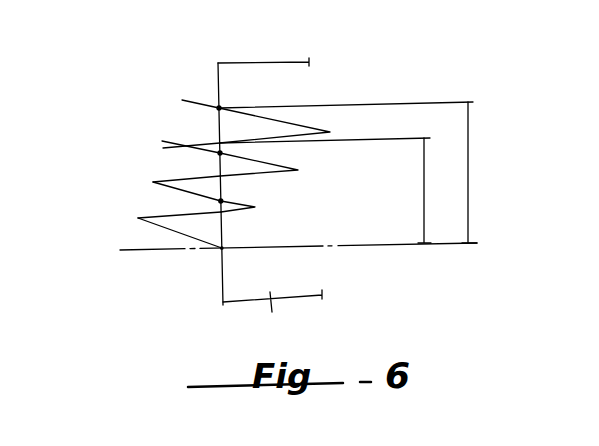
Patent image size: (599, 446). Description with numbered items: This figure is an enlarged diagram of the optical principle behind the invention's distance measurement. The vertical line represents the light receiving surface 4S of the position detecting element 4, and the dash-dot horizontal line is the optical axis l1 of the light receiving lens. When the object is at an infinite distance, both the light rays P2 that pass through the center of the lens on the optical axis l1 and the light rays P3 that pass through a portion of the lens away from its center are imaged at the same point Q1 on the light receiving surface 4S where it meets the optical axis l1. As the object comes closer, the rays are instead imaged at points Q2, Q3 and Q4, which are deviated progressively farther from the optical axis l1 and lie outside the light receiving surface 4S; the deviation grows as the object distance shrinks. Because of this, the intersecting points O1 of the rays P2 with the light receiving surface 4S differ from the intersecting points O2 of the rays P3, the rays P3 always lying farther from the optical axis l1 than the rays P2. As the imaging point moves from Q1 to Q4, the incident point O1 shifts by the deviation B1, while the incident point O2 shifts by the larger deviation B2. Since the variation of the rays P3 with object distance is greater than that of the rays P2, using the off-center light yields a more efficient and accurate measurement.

The light receiving surface 4S is at (223, 232).
The position detecting element 4 is at (272, 316).
The deviation of the incident point O1 B1 is at (334, 190).
The deviation of the incident point O2 B2 is at (357, 172).
The optical axis l1 is at (292, 246).
The light rays transmitted through the portion of the lens other than the optical ax P3 is at (182, 99).
The light rays transmitted through the center of the light receiving lens P2 is at (272, 144).
The intersecting points of the light rays P2 with the light receiving surface O1 is at (219, 151).
The intersecting points of the light rays P3 with the light receiving surface O2 is at (220, 107).
The imaging point on the optical axis Q1 is at (226, 252).
The imaging point for a closer object Q2 is at (255, 207).
The imaging point for a closer object Q3 is at (298, 170).
The imaging point for the closest object Q4 is at (330, 132).